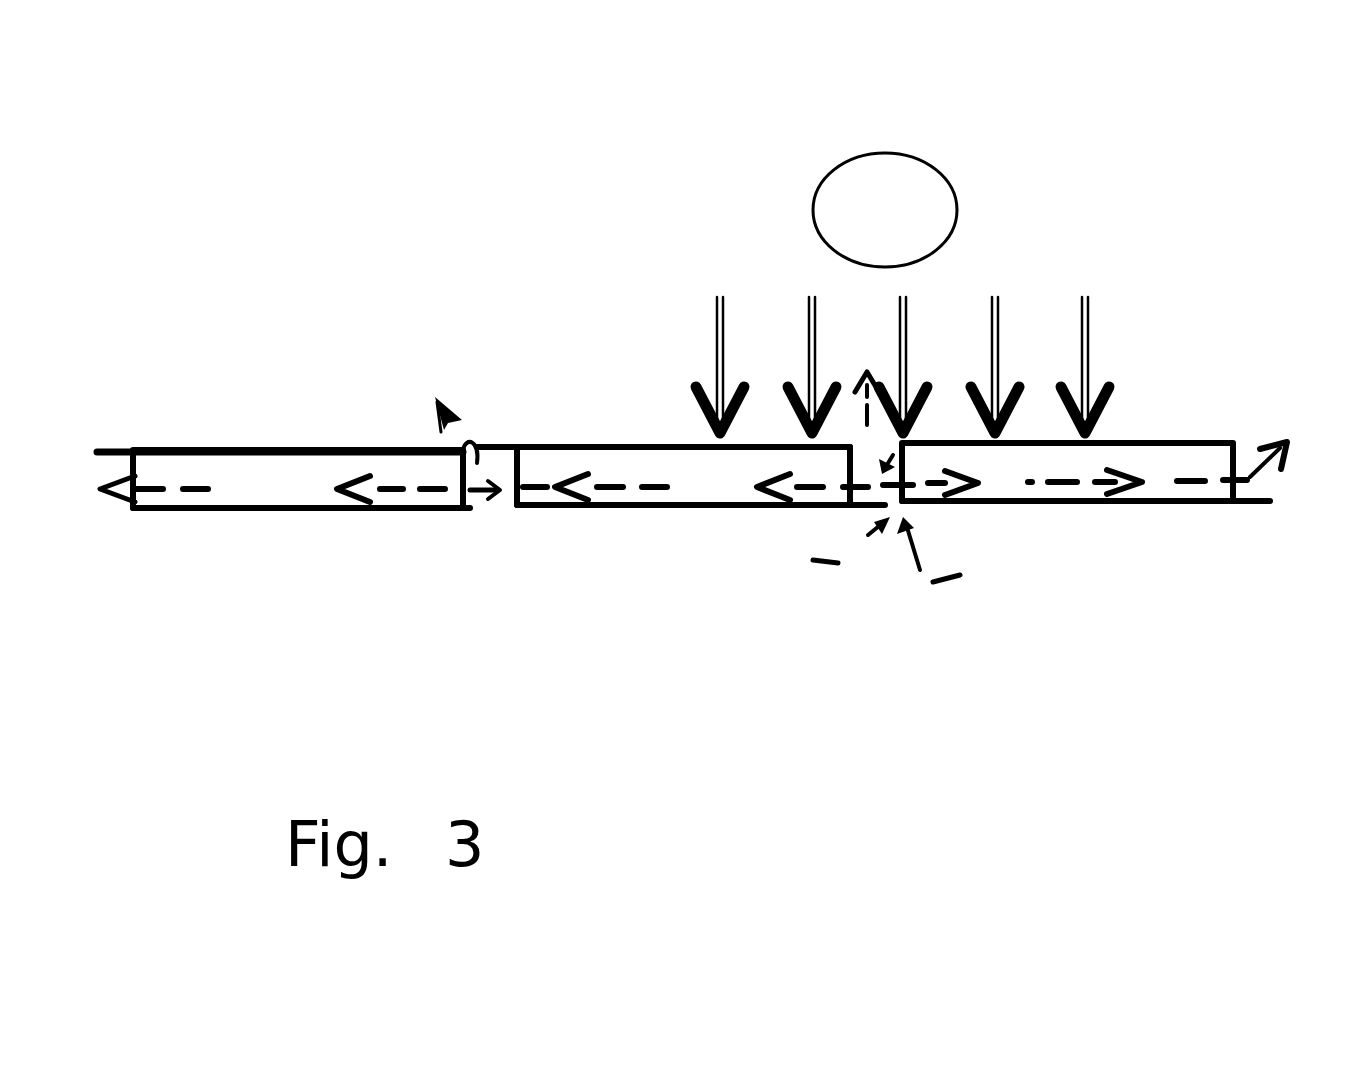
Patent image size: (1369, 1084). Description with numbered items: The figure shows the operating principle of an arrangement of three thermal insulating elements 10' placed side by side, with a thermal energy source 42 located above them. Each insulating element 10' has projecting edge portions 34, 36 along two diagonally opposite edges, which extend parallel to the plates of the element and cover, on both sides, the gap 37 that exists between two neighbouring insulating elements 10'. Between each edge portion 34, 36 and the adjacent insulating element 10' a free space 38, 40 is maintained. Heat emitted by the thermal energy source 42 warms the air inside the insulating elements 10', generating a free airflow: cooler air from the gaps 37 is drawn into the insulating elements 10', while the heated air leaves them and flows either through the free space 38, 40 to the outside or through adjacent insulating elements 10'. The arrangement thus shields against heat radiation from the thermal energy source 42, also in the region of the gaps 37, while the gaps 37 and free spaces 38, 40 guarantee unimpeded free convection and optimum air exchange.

The thermal insulating element 10' is at (694, 393).
The projecting edge portion 34 is at (110, 447).
The projecting edge portion 36 is at (483, 508).
The gap 37 is at (470, 508).
The free space 38 is at (490, 508).
The free space 40 is at (478, 448).
The thermal energy source 42 is at (902, 293).